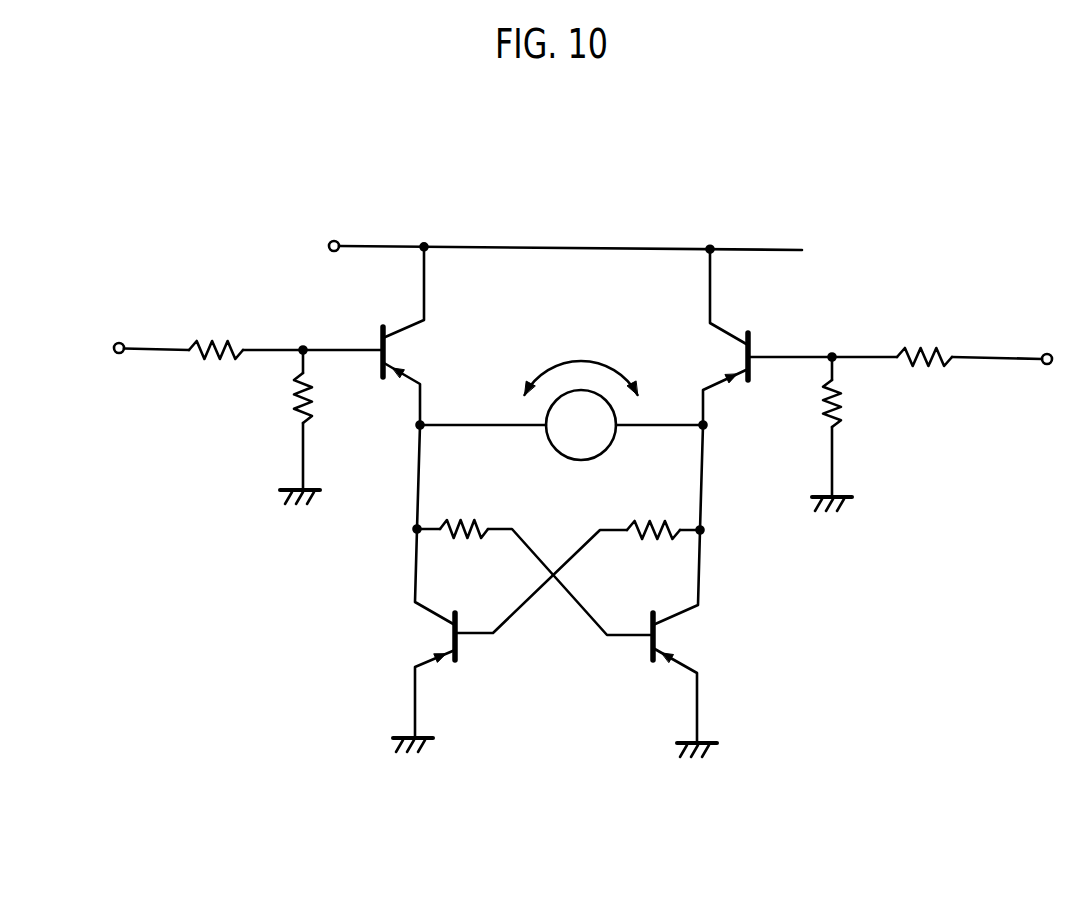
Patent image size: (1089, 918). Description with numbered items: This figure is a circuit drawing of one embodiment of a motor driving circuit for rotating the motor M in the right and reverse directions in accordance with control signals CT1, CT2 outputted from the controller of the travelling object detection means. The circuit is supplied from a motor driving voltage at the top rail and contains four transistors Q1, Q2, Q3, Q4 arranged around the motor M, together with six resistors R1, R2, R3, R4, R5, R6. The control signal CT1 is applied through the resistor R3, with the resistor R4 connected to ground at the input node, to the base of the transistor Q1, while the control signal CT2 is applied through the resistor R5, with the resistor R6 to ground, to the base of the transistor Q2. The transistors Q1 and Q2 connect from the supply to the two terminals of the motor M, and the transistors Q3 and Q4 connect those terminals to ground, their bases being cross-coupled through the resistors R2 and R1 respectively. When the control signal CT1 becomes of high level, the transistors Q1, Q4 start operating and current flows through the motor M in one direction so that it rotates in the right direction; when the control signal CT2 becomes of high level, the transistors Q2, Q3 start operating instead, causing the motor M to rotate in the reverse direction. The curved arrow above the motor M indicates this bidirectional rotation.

The control signal CT1 is at (117, 353).
The control signal CT2 is at (1012, 376).
The resistor R1 is at (580, 564).
The resistor R2 is at (533, 565).
The resistor R3 is at (246, 338).
The resistor R4 is at (312, 426).
The resistor R5 is at (891, 345).
The resistor R6 is at (843, 434).
The transistor Q1 is at (382, 336).
The transistor Q2 is at (756, 337).
The transistor Q3 is at (416, 640).
The transistor Q4 is at (690, 643).
The motor M is at (562, 410).